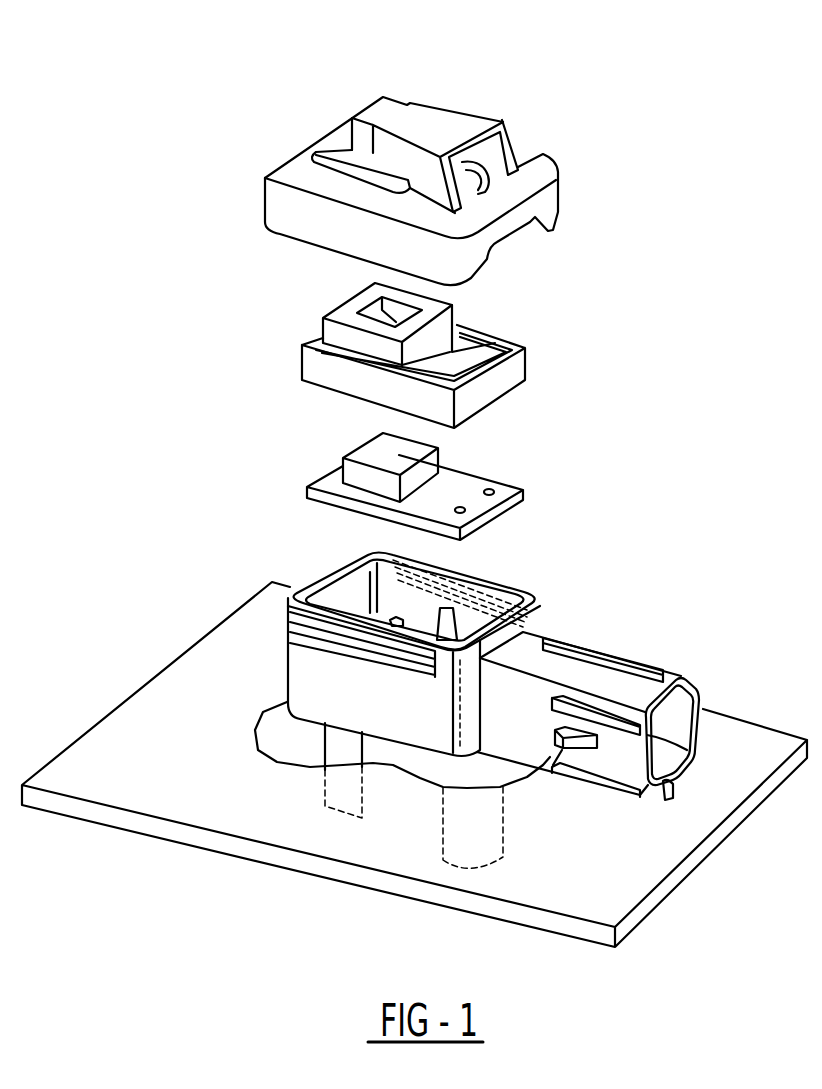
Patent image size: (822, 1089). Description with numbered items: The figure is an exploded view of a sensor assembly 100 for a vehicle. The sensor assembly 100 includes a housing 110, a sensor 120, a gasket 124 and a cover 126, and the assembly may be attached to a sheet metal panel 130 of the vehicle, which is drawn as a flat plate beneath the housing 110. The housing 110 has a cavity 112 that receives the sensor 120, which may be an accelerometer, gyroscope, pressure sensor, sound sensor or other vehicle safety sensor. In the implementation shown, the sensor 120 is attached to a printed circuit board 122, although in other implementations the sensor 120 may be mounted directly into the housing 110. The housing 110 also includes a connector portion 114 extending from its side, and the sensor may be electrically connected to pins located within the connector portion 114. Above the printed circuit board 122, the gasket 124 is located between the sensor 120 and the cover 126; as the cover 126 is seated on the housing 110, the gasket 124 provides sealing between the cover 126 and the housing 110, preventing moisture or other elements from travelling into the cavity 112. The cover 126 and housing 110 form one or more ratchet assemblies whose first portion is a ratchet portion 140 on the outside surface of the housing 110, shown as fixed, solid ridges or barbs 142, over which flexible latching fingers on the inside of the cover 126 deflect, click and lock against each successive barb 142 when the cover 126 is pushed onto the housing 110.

The sensor assembly 100 is at (228, 80).
The housing 110 is at (372, 703).
The cavity 112 is at (345, 592).
The connector portion 114 is at (640, 663).
The sensor 120 is at (382, 455).
The printed circuit board 122 is at (490, 475).
The gasket 124 is at (507, 348).
The cover 126 is at (533, 150).
The sheet metal panel 130 is at (633, 863).
The ratchet portion 140 is at (400, 643).
The barbs 142 is at (303, 643).